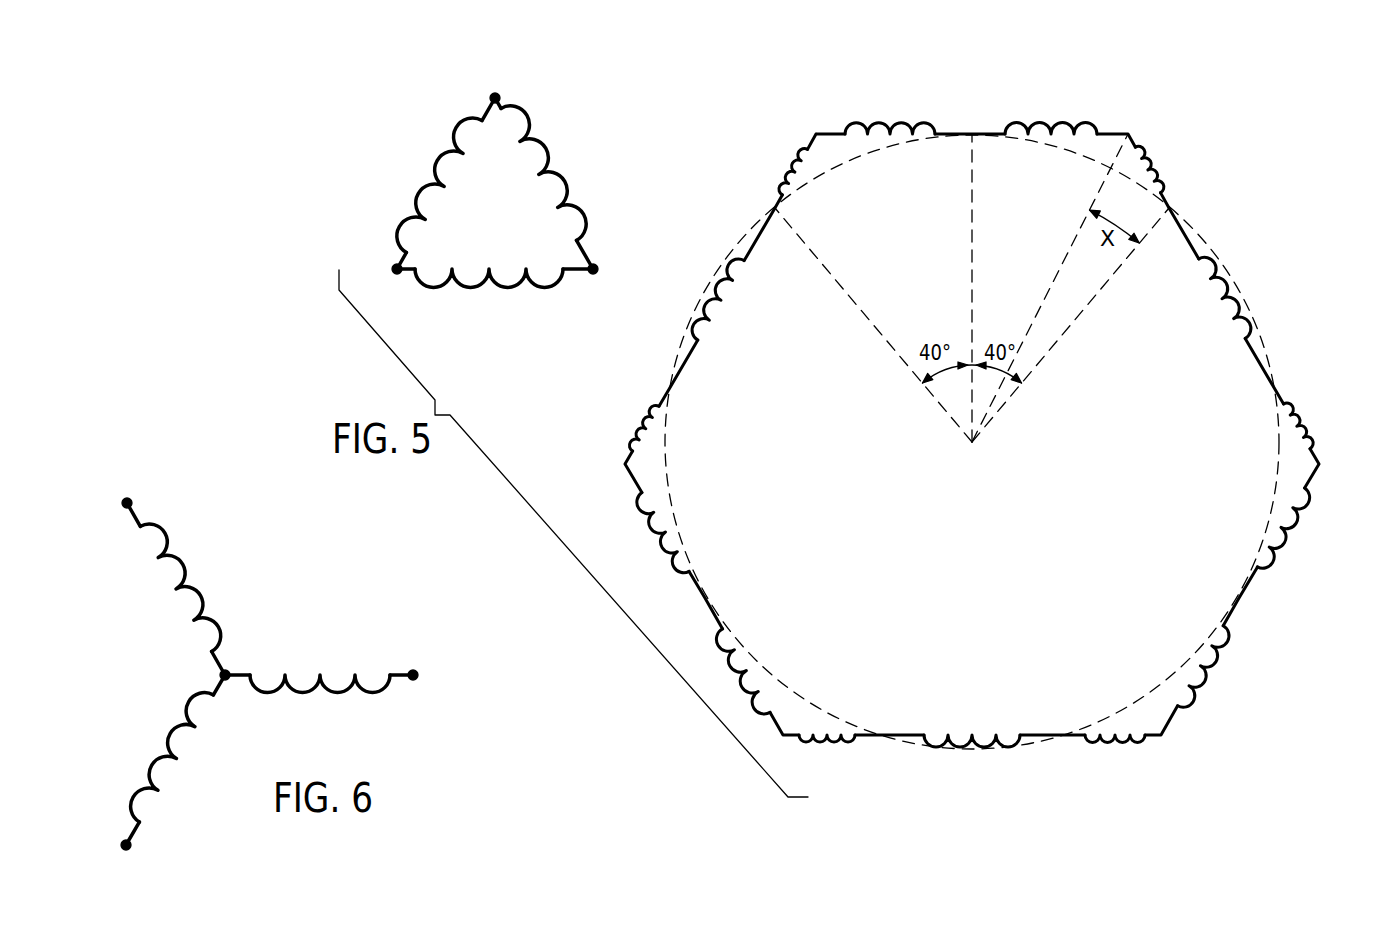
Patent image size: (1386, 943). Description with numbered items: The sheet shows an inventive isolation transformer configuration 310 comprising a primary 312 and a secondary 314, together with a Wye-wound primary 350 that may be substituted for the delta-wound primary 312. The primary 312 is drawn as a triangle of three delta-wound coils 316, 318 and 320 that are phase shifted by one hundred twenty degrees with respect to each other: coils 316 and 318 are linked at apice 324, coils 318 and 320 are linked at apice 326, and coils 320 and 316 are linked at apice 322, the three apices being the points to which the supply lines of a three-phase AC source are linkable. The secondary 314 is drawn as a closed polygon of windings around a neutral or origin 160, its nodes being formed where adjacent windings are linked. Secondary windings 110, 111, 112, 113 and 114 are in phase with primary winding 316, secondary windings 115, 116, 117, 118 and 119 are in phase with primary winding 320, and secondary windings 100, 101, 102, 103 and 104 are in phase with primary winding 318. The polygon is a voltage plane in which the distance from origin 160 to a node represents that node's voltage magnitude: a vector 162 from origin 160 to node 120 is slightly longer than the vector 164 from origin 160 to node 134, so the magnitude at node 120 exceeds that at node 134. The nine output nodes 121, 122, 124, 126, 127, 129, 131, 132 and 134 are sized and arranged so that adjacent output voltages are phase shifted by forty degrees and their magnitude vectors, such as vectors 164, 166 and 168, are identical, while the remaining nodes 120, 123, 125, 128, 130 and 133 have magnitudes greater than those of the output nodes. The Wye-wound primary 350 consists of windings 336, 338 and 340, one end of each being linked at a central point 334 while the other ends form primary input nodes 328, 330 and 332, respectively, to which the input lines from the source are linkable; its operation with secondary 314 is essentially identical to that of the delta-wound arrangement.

In FIG. 5, the isolation transformer configuration 310 is at (712, 105).
In FIG. 5, the primary 312 is at (412, 115).
In FIG. 5, the secondary 314 is at (1140, 101).
In FIG. 5, the coil 316 is at (555, 165).
In FIG. 5, the coil 318 is at (470, 290).
In FIG. 5, the coil 320 is at (425, 190).
In FIG. 5, the apice 322 is at (500, 98).
In FIG. 5, the apice 324 is at (596, 269).
In FIG. 5, the apice 326 is at (395, 269).
In FIG. 6, the primary input node 328 is at (125, 503).
In FIG. 6, the primary input node 330 is at (415, 675).
In FIG. 6, the primary input node 332 is at (123, 845).
In FIG. 6, the central point 334 is at (227, 676).
In FIG. 6, the winding 336 is at (222, 625).
In FIG. 6, the winding 338 is at (360, 674).
In FIG. 6, the winding 340 is at (182, 703).
In FIG. 6, the Wye-wound primary 350 is at (250, 526).
In FIG. 5, the secondary winding 100 is at (885, 122).
In FIG. 5, the secondary winding 101 is at (1040, 122).
In FIG. 5, the secondary winding 102 is at (1110, 742).
In FIG. 5, the secondary winding 103 is at (985, 746).
In FIG. 5, the secondary winding 104 is at (812, 742).
In FIG. 5, the secondary winding 110 is at (1150, 160).
In FIG. 5, the secondary winding 111 is at (1247, 300).
In FIG. 5, the secondary winding 112 is at (1298, 426).
In FIG. 5, the secondary winding 113 is at (752, 672).
In FIG. 5, the secondary winding 114 is at (655, 535).
In FIG. 5, the secondary winding 115 is at (1290, 525).
In FIG. 5, the secondary winding 116 is at (1205, 683).
In FIG. 5, the secondary winding 117 is at (640, 430).
In FIG. 5, the secondary winding 118 is at (712, 282).
In FIG. 5, the secondary winding 119 is at (797, 157).
In FIG. 5, the node 120 is at (1130, 133).
In FIG. 5, the output node 121 is at (1170, 208).
In FIG. 5, the output node 122 is at (1275, 391).
In FIG. 5, the node 123 is at (1320, 464).
In FIG. 5, the output node 124 is at (1238, 598).
In FIG. 5, the node 125 is at (1163, 735).
In FIG. 5, the output node 126 is at (1075, 733).
In FIG. 5, the output node 127 is at (866, 733).
In FIG. 5, the node 128 is at (785, 733).
In FIG. 5, the output node 129 is at (706, 598).
In FIG. 5, the node 130 is at (627, 464).
In FIG. 5, the output node 131 is at (670, 391).
In FIG. 5, the output node 132 is at (777, 208).
In FIG. 5, the node 133 is at (818, 133).
In FIG. 5, the output node 134 is at (968, 136).
In FIG. 5, the origin 160 is at (970, 444).
In FIG. 5, the vector 162 is at (1050, 288).
In FIG. 5, the vector 164 is at (970, 290).
In FIG. 5, the vector 166 is at (873, 325).
In FIG. 5, the vector 168 is at (1088, 302).